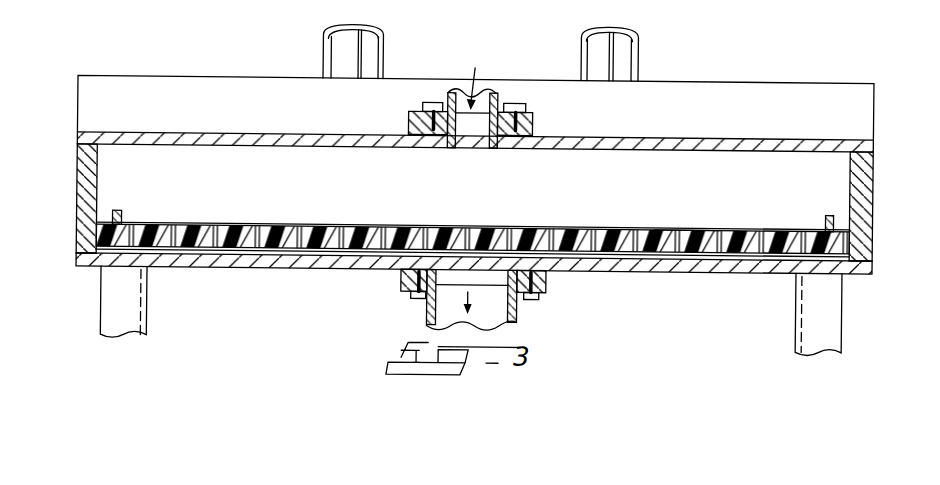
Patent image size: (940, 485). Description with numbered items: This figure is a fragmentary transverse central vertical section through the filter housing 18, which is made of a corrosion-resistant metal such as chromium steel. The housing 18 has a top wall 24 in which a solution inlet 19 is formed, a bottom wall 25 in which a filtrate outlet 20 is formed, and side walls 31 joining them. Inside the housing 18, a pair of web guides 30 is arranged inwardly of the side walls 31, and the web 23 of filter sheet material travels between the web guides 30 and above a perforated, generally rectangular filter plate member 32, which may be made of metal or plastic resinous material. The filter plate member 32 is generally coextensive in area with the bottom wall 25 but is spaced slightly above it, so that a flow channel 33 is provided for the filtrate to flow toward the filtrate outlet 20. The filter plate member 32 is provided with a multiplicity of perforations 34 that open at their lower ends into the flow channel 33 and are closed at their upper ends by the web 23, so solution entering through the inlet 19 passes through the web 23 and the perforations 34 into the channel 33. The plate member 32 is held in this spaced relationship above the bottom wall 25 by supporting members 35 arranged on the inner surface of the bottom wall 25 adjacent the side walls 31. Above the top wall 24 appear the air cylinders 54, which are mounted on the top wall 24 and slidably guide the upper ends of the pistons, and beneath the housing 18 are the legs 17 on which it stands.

The leg 17 is at (132, 317).
The filter housing 18 is at (744, 131).
The solution inlet 19 is at (483, 88).
The filtrate outlet 20 is at (493, 305).
The filter sheet web 23 is at (496, 230).
The top wall 24 is at (818, 136).
The bottom wall 25 is at (720, 262).
The web guides 30 is at (124, 216).
The side walls 31 is at (77, 209).
The filter plate member 32 is at (633, 230).
The flow channel 33 is at (625, 252).
The perforations 34 is at (690, 235).
The supporting members 35 is at (80, 271).
The air cylinder 54 is at (370, 54).